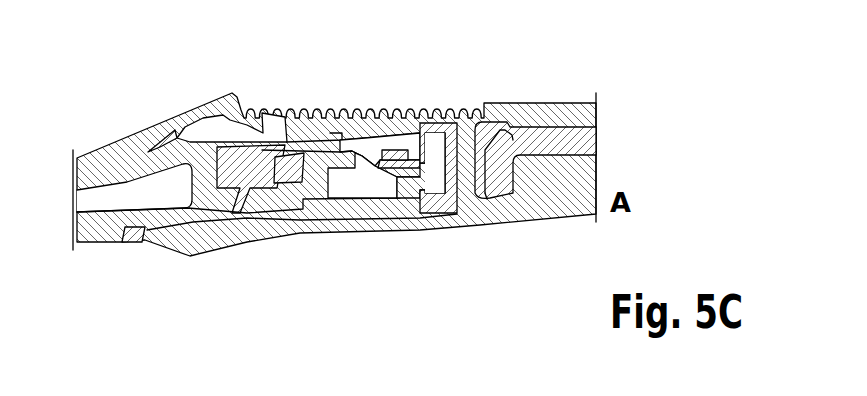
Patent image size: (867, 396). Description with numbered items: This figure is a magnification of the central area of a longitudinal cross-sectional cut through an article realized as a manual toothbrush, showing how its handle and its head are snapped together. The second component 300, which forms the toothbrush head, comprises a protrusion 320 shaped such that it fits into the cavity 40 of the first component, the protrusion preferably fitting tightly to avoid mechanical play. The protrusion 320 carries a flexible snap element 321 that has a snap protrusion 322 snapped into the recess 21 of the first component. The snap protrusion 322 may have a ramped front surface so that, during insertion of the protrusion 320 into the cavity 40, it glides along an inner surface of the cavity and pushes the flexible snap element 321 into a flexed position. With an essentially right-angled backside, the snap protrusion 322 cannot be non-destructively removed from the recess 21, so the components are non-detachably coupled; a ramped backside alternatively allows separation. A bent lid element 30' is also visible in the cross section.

The second component 300 is at (106, 140).
The protrusion 320 is at (262, 192).
The flexible snap element 321 is at (397, 177).
The snap protrusion 322 is at (355, 168).
The cavity 40 is at (296, 166).
The recess 21 is at (381, 149).
The bent lid element 30' is at (432, 121).